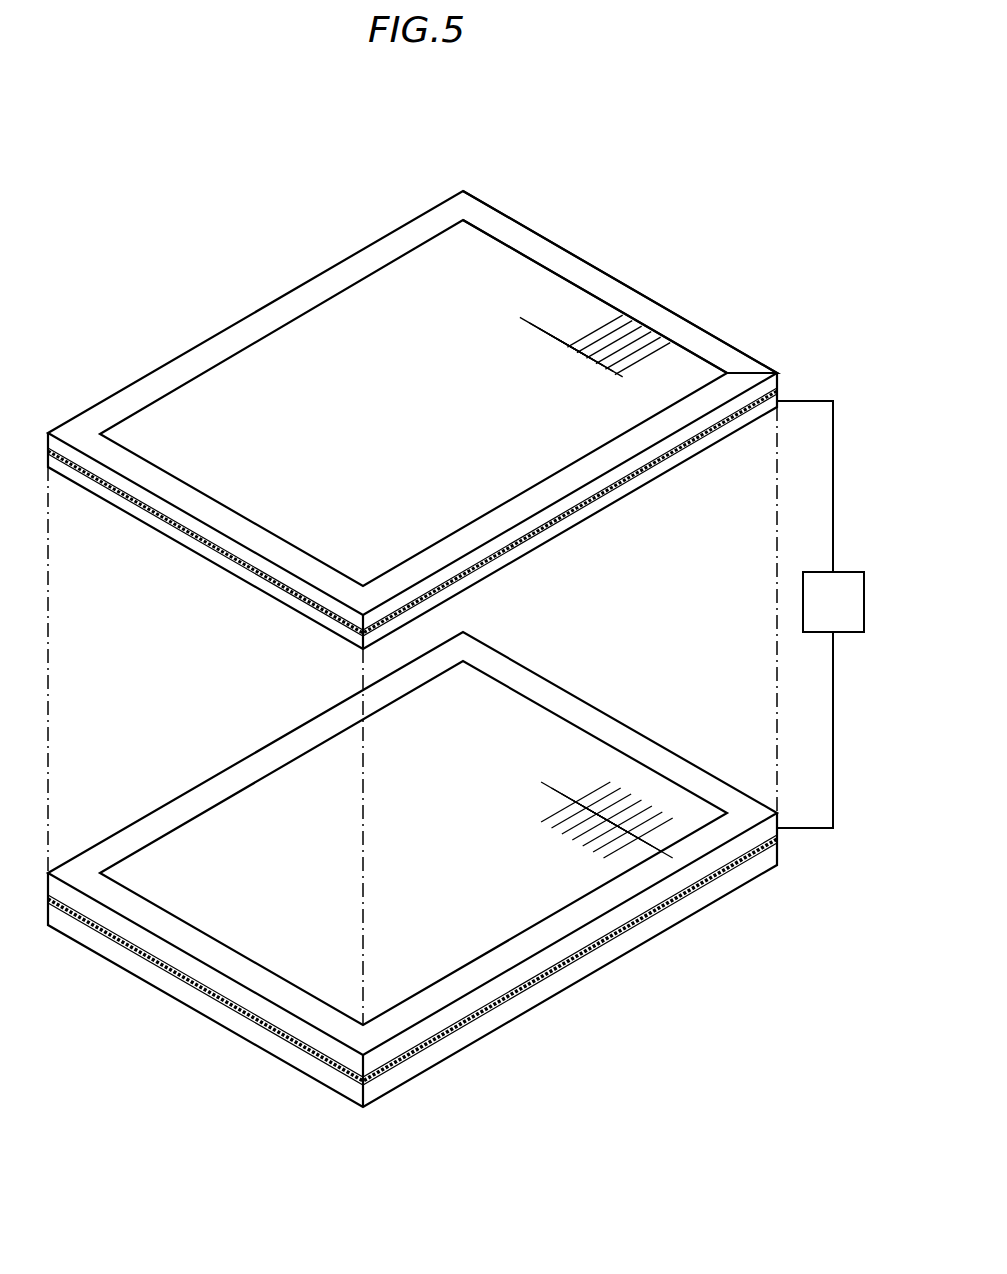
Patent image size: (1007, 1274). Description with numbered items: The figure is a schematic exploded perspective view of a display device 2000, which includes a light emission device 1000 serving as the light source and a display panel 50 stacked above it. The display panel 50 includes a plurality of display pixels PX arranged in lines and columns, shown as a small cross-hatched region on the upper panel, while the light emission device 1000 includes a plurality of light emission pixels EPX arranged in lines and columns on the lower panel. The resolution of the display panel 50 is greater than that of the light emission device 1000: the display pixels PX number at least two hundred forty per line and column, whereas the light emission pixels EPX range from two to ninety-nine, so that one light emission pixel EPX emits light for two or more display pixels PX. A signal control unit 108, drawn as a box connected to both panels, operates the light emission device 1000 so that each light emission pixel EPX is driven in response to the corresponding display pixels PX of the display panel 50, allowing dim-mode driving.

The display device 2000 is at (327, 182).
The display panel 50 is at (620, 282).
The display pixel PX is at (620, 338).
The light emission device 1000 is at (412, 869).
The light emission pixel EPX is at (640, 825).
The signal control unit 108 is at (820, 614).